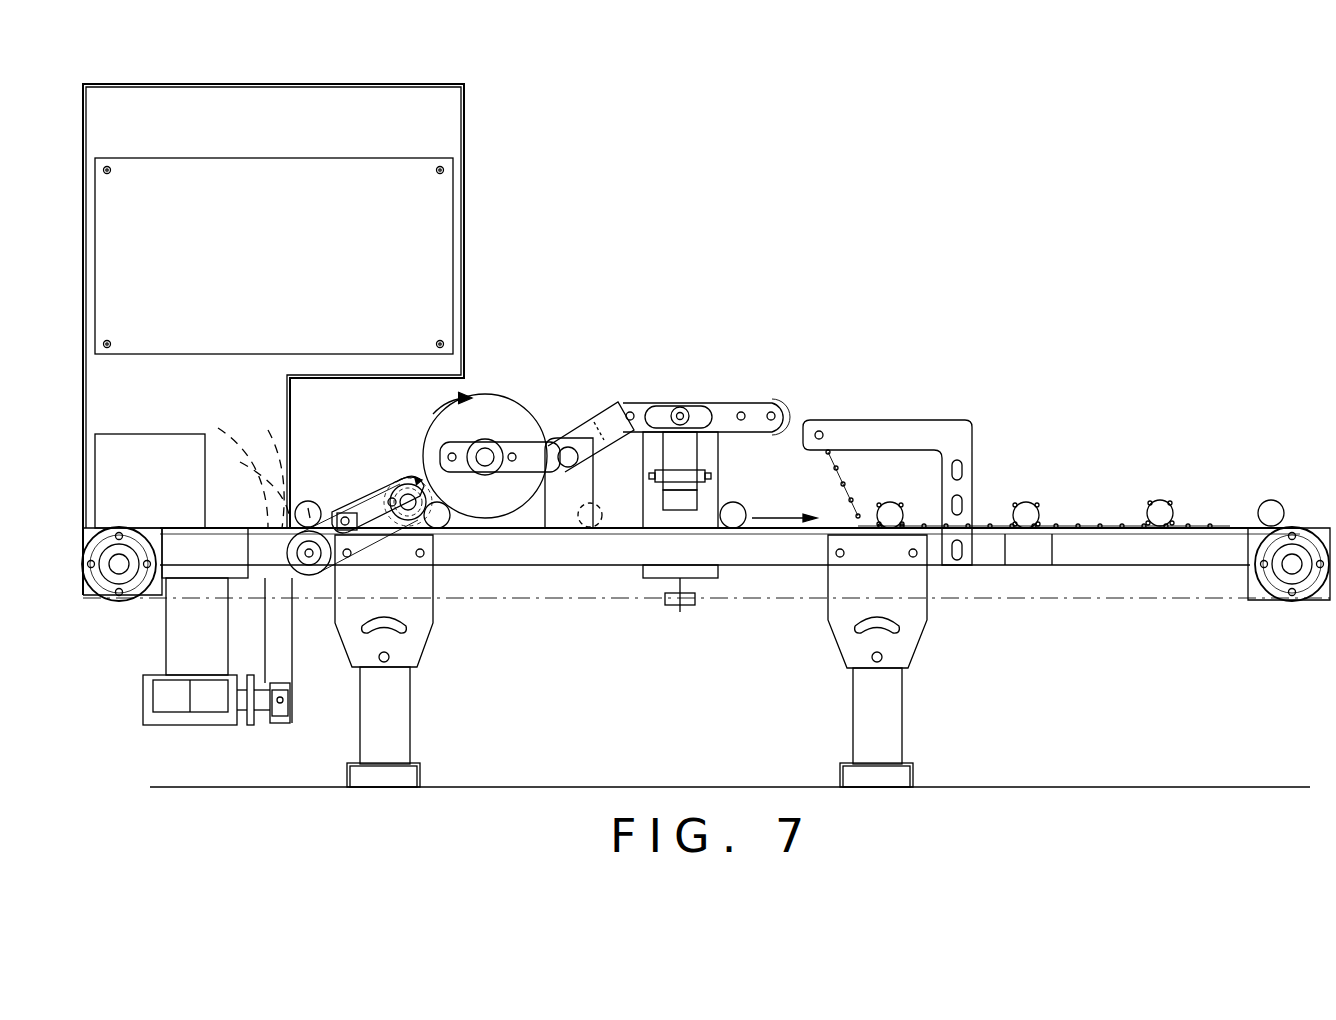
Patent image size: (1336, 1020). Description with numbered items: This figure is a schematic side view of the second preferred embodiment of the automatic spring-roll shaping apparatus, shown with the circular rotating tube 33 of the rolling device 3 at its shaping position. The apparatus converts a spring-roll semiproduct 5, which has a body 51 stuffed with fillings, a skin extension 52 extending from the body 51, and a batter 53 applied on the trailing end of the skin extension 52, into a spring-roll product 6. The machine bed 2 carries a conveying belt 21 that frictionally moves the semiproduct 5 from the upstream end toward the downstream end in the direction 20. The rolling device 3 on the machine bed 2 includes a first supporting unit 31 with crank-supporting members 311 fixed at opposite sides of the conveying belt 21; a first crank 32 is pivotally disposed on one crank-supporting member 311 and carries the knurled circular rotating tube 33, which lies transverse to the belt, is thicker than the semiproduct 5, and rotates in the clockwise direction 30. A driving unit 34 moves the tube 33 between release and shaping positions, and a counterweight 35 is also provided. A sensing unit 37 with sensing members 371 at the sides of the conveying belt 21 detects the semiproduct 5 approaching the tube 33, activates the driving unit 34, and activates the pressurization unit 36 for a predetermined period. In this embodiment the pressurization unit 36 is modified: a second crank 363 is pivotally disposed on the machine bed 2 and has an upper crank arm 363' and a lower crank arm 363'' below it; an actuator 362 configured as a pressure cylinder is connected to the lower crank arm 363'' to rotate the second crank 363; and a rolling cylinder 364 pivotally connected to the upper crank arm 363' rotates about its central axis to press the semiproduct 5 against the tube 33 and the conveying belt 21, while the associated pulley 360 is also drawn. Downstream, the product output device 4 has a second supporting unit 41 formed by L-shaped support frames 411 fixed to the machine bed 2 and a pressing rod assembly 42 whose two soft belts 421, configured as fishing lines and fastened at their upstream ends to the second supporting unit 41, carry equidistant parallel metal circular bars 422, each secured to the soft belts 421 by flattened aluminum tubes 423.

The machine bed 2 is at (255, 735).
The direction 20 is at (778, 517).
The conveying belt 21 is at (172, 600).
The rolling device 3 is at (650, 352).
The clockwise direction 30 is at (478, 412).
The first supporting unit 31 is at (602, 495).
The crank-supporting member 311 is at (565, 512).
The first crank 32 is at (616, 424).
The circular rotating tube 33 is at (515, 436).
The driving unit 34 is at (710, 488).
The counterweight 35 is at (787, 405).
The pressurization unit 36 is at (435, 523).
The driven pulley 360 is at (398, 486).
The actuator 362 is at (170, 724).
The second crank 363 is at (290, 677).
The upper crank arm 363' is at (285, 450).
The lower crank arm 363'' is at (317, 732).
The rolling cylinder 364 is at (430, 494).
The sensing unit 37 is at (362, 505).
The sensing member 371 is at (348, 498).
The product output device 4 is at (915, 410).
The second supporting unit 41 is at (988, 432).
The L-shaped support frame 411 is at (950, 432).
The pressing rod assembly 42 is at (1140, 512).
The soft belt 421 is at (1165, 500).
The circular bar 422 is at (1156, 500).
The aluminum tube 423 is at (1150, 502).
The spring-roll semiproduct 5 is at (268, 588).
The body 51 is at (262, 467).
The skin extension 52 is at (228, 467).
The batter 53 is at (250, 487).
The spring-roll product 6 is at (440, 522).